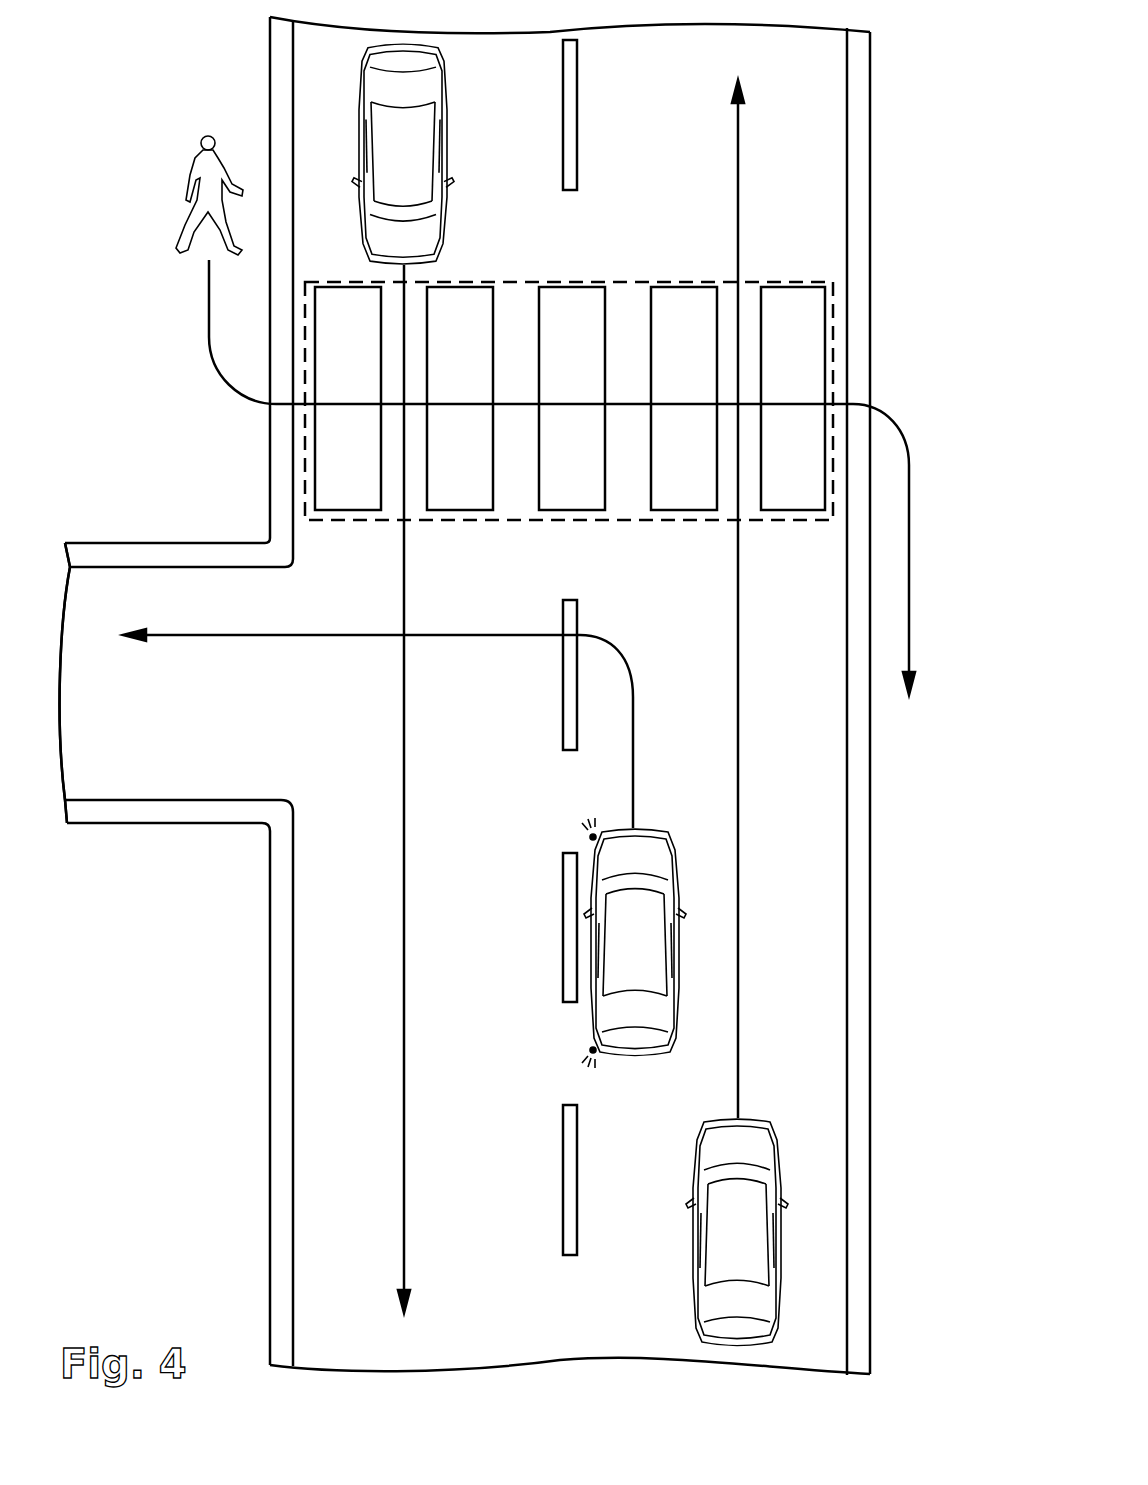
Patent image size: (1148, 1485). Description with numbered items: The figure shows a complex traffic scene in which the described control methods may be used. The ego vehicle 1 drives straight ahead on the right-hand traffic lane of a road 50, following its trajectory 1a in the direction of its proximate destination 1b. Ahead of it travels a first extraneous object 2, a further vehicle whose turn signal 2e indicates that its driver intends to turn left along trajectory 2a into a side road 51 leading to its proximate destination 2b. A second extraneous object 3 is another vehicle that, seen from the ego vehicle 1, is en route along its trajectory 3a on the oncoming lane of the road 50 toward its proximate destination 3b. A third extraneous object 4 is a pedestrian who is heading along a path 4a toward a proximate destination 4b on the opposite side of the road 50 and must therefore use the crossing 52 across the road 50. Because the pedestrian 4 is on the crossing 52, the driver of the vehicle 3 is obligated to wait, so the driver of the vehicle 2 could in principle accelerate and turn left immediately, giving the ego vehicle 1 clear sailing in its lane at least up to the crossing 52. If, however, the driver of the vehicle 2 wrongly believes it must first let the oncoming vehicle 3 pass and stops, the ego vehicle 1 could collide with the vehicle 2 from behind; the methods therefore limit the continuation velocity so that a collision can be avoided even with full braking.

The ego vehicle 1 is at (730, 1255).
The trajectory of ego vehicle 1a is at (740, 200).
The proximate destination of ego vehicle 1b is at (750, 77).
The first extraneous object 2 is at (630, 1012).
The trajectory of other vehicle 2a is at (497, 635).
The proximate destination of vehicle 2 2b is at (120, 650).
The turn signal 2e is at (590, 838).
The second extraneous object 3 is at (402, 140).
The trajectory of oncoming vehicle 3a is at (404, 805).
The proximate destination of vehicle 3 3b is at (420, 1351).
The third extraneous object 4 is at (195, 165).
The trajectory of pedestrian 4a is at (209, 312).
The destination direction of pedestrian 4b is at (930, 738).
The road 50 is at (856, 131).
The side road 51 is at (133, 553).
The crossing 52 is at (830, 335).